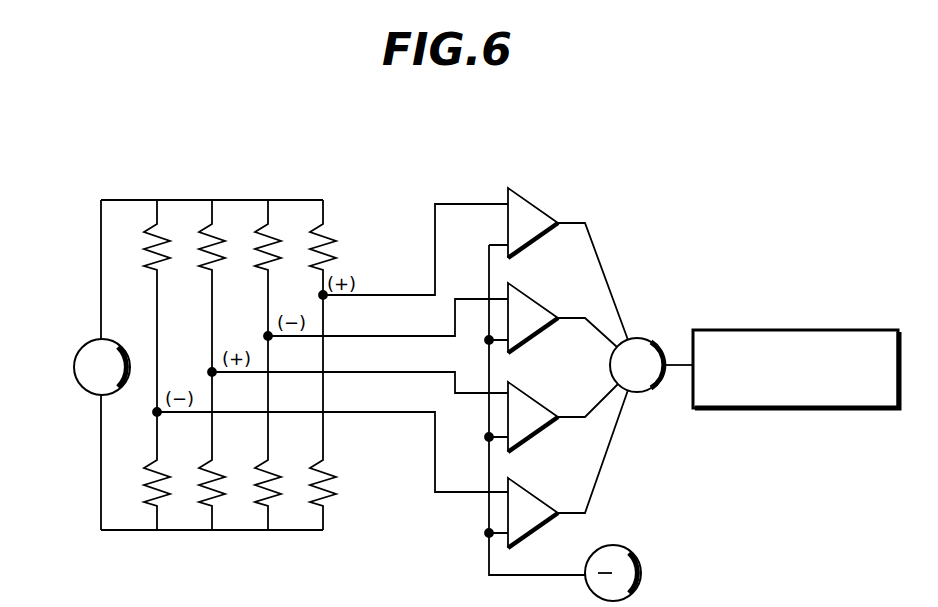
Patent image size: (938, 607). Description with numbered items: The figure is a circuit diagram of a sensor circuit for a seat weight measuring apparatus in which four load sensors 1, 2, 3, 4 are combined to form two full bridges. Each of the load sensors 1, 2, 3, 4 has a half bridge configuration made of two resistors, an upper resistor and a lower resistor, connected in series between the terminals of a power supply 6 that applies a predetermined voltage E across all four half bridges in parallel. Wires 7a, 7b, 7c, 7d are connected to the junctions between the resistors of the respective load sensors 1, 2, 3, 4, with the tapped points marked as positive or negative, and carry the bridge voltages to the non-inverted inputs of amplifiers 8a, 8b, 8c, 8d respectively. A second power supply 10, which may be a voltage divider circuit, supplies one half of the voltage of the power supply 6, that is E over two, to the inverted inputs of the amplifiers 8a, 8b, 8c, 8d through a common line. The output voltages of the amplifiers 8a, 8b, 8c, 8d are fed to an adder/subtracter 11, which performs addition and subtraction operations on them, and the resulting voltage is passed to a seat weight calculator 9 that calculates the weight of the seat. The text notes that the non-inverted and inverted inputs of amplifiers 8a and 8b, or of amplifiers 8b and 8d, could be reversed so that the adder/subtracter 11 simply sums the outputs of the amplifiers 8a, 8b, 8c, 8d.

The load sensor 1 is at (157, 192).
The load sensor 2 is at (213, 192).
The load sensor 3 is at (269, 192).
The load sensor 4 is at (325, 192).
The power supply 6 is at (78, 350).
The wire 7a is at (343, 411).
The wire 7b is at (343, 371).
The wire 7c is at (343, 335).
The wire 7d is at (365, 294).
The amplifier 8a is at (518, 483).
The amplifier 8b is at (518, 386).
The amplifier 8c is at (518, 288).
The amplifier 8d is at (518, 193).
The seat weight calculator 9 is at (750, 330).
The power supply 10 is at (630, 548).
The adder/subtracter 11 is at (652, 340).